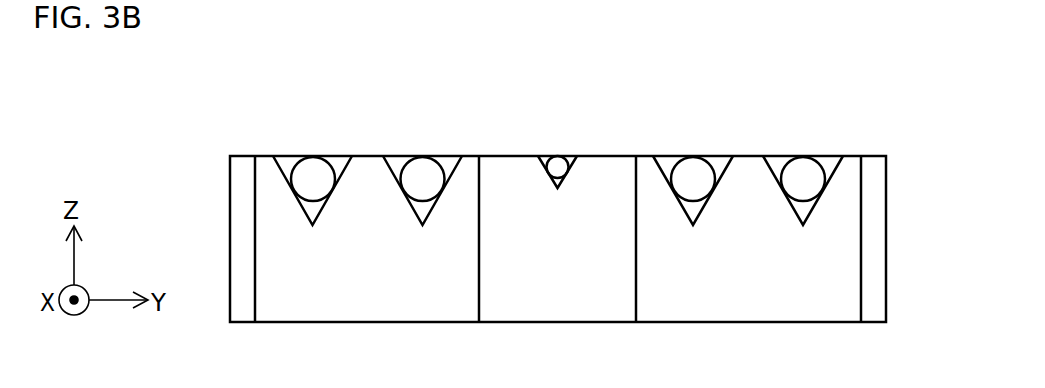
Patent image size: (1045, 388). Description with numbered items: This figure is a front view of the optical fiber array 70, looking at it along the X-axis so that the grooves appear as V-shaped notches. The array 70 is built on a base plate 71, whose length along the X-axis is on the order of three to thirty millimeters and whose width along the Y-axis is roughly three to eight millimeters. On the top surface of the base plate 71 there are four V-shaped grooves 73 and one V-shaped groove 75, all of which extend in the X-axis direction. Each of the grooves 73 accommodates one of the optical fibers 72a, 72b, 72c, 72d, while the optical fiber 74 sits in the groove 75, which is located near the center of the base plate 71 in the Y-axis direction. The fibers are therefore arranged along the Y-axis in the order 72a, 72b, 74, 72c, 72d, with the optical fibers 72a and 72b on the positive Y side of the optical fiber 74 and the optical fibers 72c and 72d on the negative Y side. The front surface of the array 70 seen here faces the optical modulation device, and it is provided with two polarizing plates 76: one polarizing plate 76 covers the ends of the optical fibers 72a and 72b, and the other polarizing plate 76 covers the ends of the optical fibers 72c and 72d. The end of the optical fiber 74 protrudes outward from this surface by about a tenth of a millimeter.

The optical fiber array 70 is at (530, 207).
The base plate 71 is at (880, 300).
The optical fiber 72a is at (803, 167).
The optical fiber 72b is at (693, 167).
The optical fiber 72c is at (423, 167).
The optical fiber 72d is at (312, 167).
The V-shaped groove 73 is at (282, 160).
The optical fiber 74 is at (559, 158).
The V-shaped groove 75 is at (571, 157).
The polarizing plate 76 is at (263, 232).